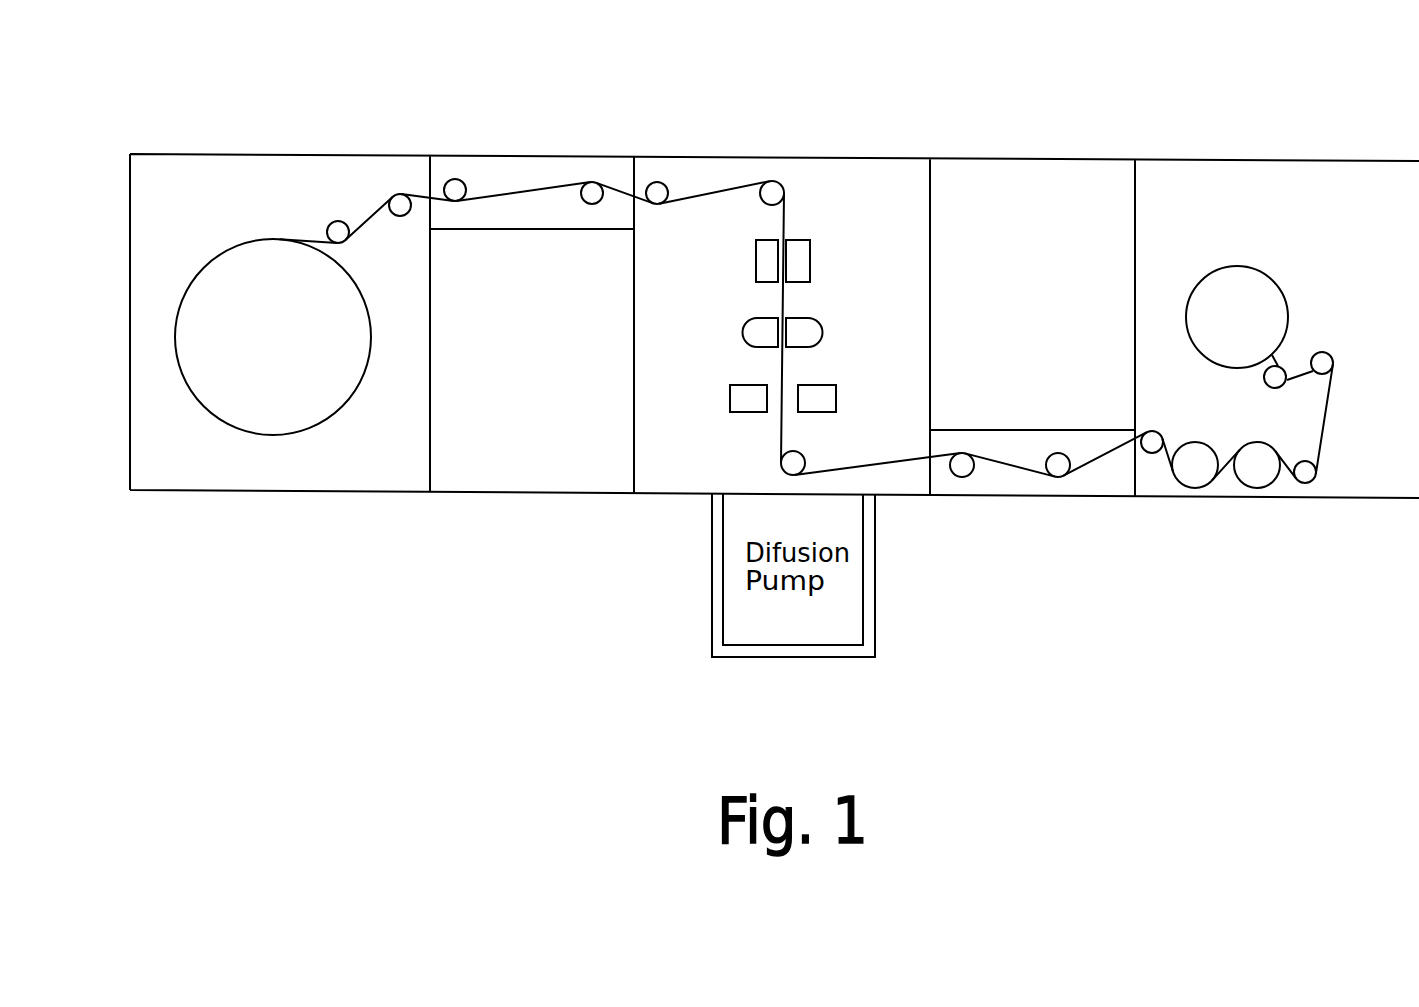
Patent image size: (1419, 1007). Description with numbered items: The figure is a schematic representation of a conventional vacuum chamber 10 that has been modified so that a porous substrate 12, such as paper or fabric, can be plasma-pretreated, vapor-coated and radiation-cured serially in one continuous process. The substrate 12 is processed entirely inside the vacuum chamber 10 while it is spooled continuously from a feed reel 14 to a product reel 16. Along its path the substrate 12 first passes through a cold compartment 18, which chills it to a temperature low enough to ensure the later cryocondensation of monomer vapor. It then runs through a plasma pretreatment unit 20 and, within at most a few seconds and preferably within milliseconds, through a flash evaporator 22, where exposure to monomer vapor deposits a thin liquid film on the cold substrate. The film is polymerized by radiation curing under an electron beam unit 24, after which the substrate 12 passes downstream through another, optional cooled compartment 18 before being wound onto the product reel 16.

The vacuum chamber 10 is at (1012, 123).
The porous substrate 12 is at (367, 218).
The feed reel 14 is at (322, 422).
The product reel 16 is at (1273, 277).
The cold compartment 18 is at (525, 168).
The plasma pretreatment unit 20 is at (810, 255).
The flash evaporator 22 is at (840, 308).
The electron beam unit 24 is at (836, 396).